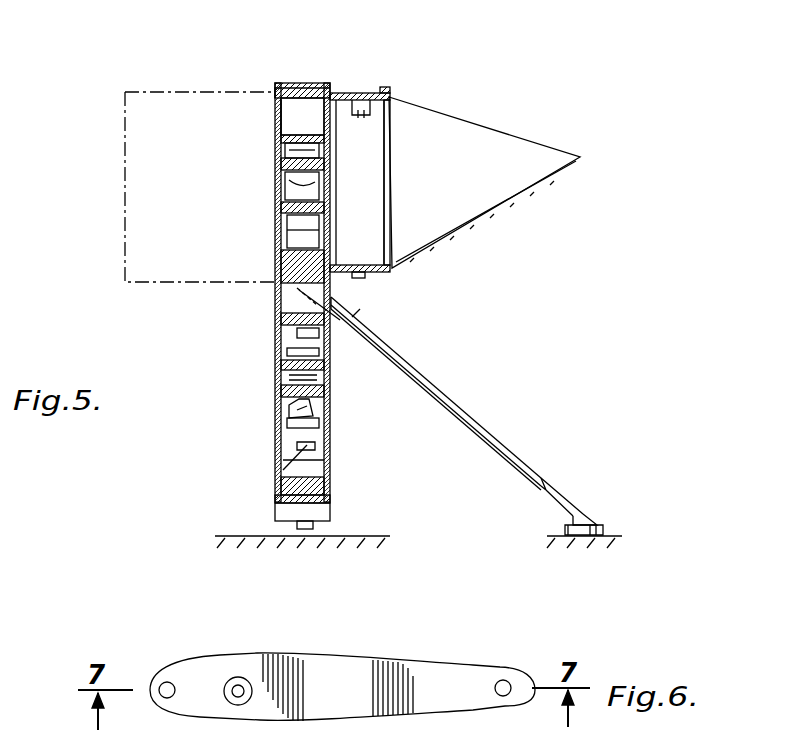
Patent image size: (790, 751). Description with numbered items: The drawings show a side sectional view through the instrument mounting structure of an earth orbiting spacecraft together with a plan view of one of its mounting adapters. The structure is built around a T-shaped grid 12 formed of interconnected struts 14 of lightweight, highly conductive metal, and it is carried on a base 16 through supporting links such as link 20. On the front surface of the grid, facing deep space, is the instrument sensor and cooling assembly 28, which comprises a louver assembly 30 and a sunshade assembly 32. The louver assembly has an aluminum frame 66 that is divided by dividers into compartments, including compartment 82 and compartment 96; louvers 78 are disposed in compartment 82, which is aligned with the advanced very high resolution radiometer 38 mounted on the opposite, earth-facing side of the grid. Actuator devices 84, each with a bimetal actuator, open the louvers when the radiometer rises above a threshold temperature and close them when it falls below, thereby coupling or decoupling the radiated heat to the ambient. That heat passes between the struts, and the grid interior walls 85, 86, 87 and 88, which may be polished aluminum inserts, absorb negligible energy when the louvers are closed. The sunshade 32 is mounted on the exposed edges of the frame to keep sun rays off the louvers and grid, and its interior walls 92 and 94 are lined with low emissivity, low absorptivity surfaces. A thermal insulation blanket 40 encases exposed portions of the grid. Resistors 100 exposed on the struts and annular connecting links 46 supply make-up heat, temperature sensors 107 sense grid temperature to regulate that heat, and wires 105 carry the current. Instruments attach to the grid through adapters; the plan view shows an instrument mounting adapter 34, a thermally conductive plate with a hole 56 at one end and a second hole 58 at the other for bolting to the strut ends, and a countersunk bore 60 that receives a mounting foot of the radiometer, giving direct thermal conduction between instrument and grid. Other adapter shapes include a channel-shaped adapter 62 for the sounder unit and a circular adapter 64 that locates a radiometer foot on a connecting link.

In FIG. 5, the T-shaped grid 12 is at (325, 406).
In FIG. 5, the struts 14 is at (280, 232).
In FIG. 5, the base 16 is at (215, 538).
In FIG. 5, the supporting link 20 is at (437, 386).
In FIG. 5, the instrument sensor and cooling assembly 28 is at (447, 98).
In FIG. 5, the louver assembly 30 is at (374, 76).
In FIG. 5, the sunshade assembly 32 is at (505, 114).
In FIG. 5, the instrument mounting adapter 34 is at (275, 97).
In FIG. 6, the instrument mounting adapter 34 is at (430, 668).
In FIG. 5, the advanced very high resolution radiometer (AVHRR) 38 is at (156, 116).
In FIG. 5, the thermal radiation and conductive insulation blanket 40 is at (305, 83).
In FIG. 5, the annular connecting links 46 is at (280, 186).
In FIG. 6, the hole 56 is at (167, 682).
In FIG. 6, the second hole 58 is at (503, 680).
In FIG. 6, the countersunk bore 60 is at (238, 677).
In FIG. 5, the adapter 62 is at (279, 126).
In FIG. 5, the circular adapter 64 is at (283, 258).
In FIG. 5, the aluminum frame 66 is at (387, 96).
In FIG. 5, the louvers 78 is at (341, 170).
In FIG. 5, the compartment 82 is at (392, 110).
In FIG. 5, the actuator devices 84 is at (358, 108).
In FIG. 5, the grid interior wall 85 is at (293, 118).
In FIG. 5, the grid interior wall 86 is at (280, 196).
In FIG. 5, the grid interior wall 87 is at (288, 152).
In FIG. 5, the grid interior wall 88 is at (303, 230).
In FIG. 5, the interior wall of sunshade 92 is at (540, 148).
In FIG. 5, the interior wall of sunshade 94 is at (498, 200).
In FIG. 5, the compartment 96 is at (508, 262).
In FIG. 5, the resistors 100 is at (294, 195).
In FIG. 5, the wires 105 is at (287, 400).
In FIG. 5, the temperature sensors 107 is at (346, 322).